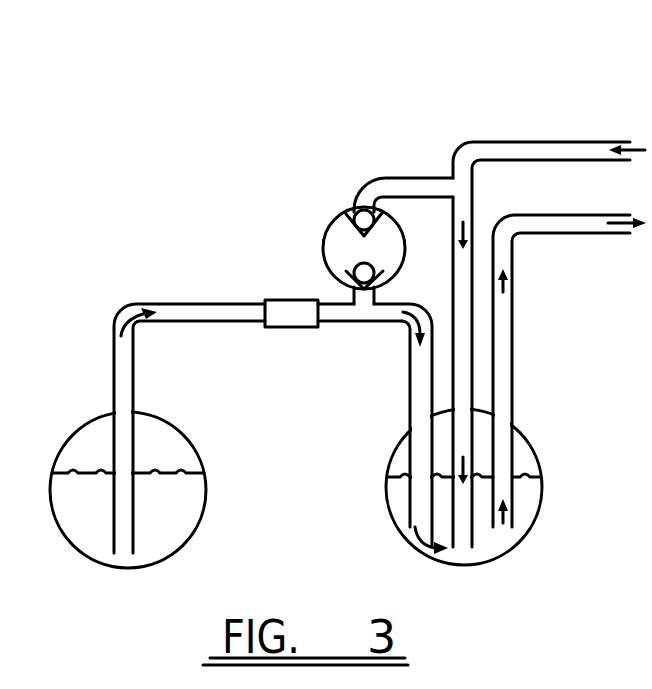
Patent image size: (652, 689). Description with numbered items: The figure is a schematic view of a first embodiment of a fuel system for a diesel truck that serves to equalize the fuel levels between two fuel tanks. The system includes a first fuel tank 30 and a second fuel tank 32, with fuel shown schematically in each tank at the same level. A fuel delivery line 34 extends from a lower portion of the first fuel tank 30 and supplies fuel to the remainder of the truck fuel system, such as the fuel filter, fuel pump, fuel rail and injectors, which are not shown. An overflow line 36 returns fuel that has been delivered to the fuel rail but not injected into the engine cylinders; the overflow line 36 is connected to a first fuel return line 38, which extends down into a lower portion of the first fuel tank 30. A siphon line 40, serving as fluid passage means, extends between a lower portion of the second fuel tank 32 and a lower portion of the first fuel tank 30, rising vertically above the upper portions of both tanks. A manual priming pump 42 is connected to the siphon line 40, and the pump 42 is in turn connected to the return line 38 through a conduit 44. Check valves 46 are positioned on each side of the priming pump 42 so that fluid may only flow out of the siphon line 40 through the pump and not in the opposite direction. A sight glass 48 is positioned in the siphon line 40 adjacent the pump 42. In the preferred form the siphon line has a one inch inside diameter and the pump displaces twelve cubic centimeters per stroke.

The first fuel tank 30 is at (543, 500).
The second fuel tank 32 is at (193, 527).
The fuel delivery line 34 is at (513, 327).
The overflow line 36 is at (485, 143).
The first fuel return line 38 is at (473, 376).
The siphon line 40 is at (133, 382).
The manual priming pump 42 is at (327, 238).
The conduit 44 is at (422, 177).
The check valves 46 is at (352, 213).
The sight glass 48 is at (300, 327).